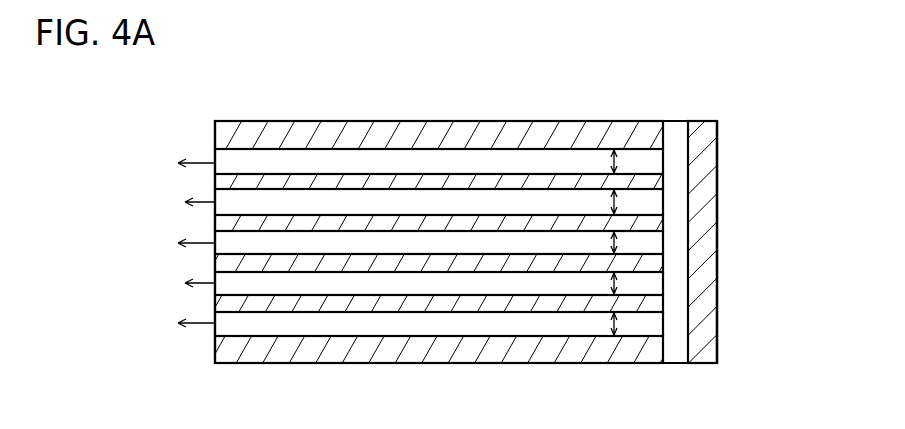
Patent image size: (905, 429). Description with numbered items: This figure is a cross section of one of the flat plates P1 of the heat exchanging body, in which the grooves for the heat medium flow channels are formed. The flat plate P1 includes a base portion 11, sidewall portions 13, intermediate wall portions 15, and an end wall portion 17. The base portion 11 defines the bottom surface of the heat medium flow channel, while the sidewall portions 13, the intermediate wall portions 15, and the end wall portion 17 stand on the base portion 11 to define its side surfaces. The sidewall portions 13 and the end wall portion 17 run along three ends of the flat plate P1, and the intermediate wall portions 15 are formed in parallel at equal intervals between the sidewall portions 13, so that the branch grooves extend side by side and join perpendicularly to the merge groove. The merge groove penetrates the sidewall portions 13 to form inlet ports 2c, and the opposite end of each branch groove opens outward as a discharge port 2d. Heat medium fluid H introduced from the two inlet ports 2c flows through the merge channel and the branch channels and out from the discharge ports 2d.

The base portion 11 is at (286, 157).
The sidewall portions 13 is at (425, 121).
The intermediate wall portions 15 is at (321, 301).
The end wall portion 17 is at (710, 173).
The heat medium fluid H is at (679, 110).
The inlet ports 2c is at (682, 118).
The discharge ports 2d is at (215, 190).
The flat plate P1 is at (727, 249).